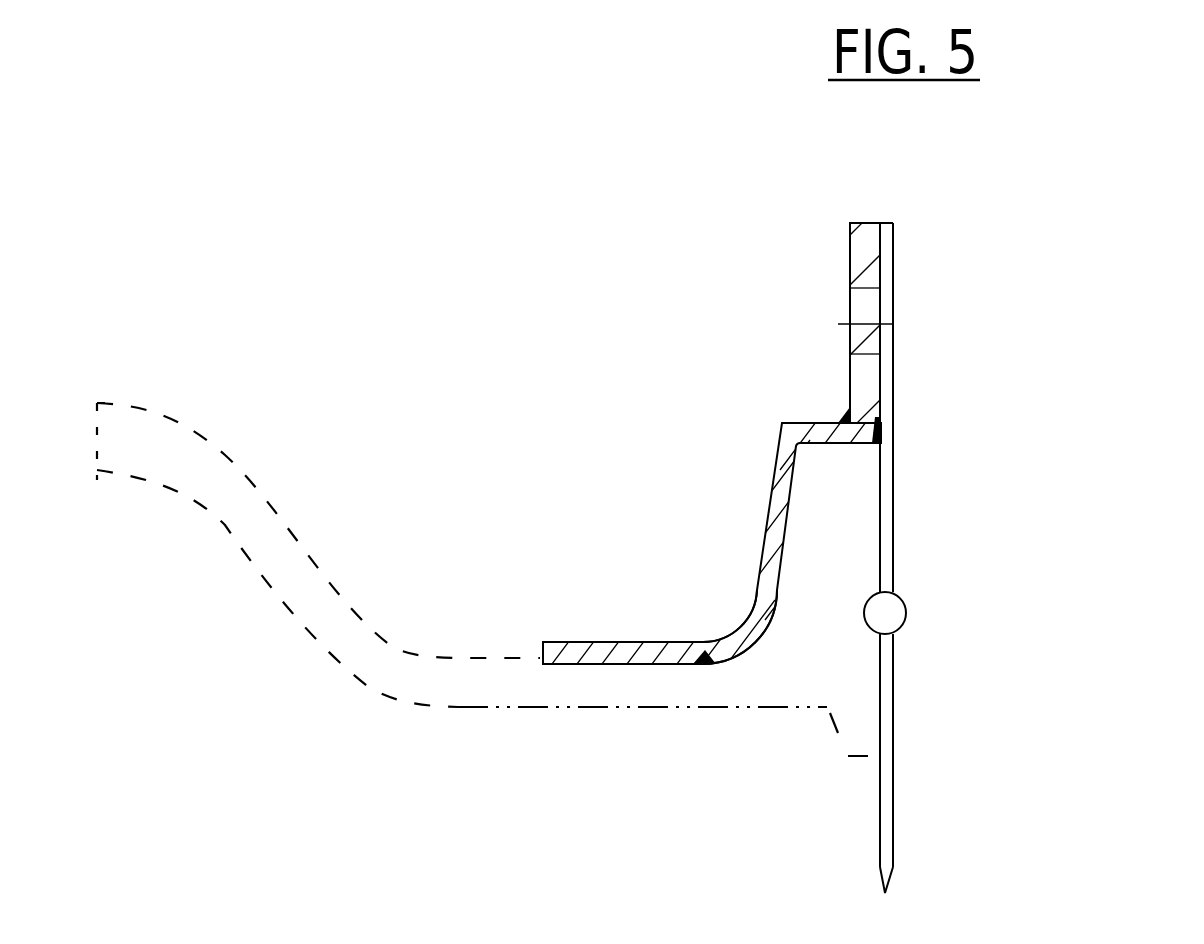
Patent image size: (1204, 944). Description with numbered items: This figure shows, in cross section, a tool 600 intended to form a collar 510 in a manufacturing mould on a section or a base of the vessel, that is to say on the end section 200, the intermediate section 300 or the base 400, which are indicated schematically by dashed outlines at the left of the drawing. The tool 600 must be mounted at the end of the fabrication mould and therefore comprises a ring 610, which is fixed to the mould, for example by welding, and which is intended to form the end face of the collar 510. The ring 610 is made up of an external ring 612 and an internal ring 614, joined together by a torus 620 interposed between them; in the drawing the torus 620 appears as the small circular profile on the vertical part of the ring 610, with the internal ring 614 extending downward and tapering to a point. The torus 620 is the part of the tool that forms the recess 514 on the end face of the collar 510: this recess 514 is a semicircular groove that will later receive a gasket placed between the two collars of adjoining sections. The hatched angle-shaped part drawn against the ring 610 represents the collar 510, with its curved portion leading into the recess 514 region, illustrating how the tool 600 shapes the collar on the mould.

The tool 600 is at (790, 308).
The ring 610 is at (932, 286).
The external ring 612 is at (893, 495).
The internal ring 614 is at (893, 733).
The torus 620 is at (898, 618).
The collar 510 is at (813, 547).
The recess 514 is at (866, 608).
The end section 200 is at (202, 458).
The intermediate section 300 is at (277, 502).
The base 400 is at (585, 546).